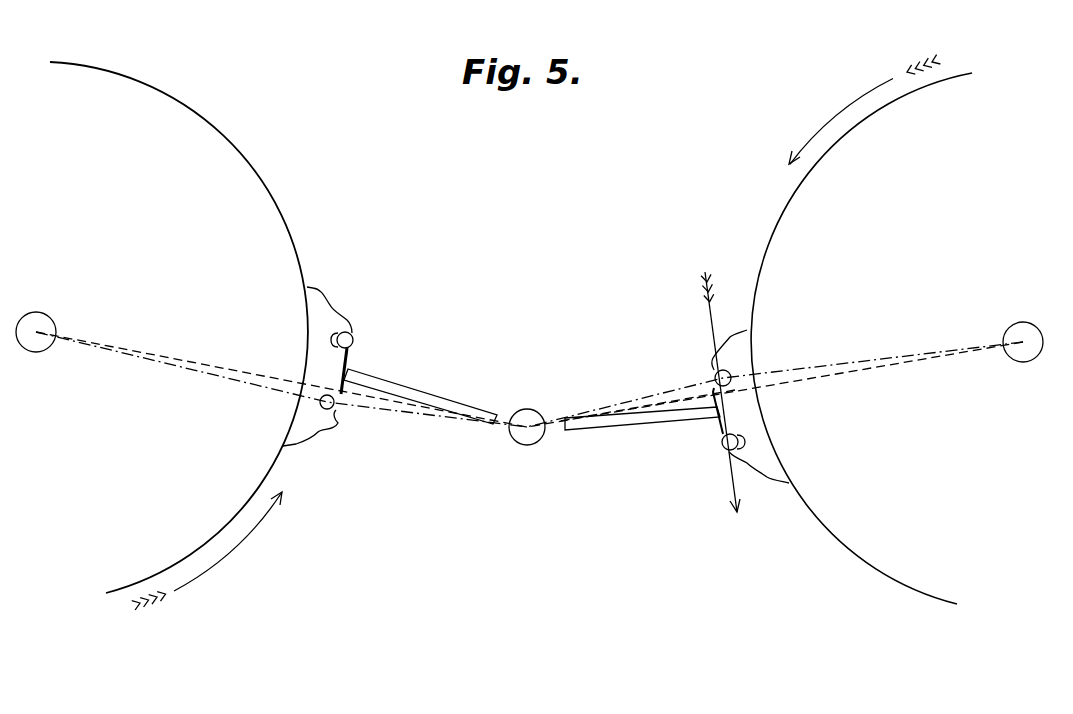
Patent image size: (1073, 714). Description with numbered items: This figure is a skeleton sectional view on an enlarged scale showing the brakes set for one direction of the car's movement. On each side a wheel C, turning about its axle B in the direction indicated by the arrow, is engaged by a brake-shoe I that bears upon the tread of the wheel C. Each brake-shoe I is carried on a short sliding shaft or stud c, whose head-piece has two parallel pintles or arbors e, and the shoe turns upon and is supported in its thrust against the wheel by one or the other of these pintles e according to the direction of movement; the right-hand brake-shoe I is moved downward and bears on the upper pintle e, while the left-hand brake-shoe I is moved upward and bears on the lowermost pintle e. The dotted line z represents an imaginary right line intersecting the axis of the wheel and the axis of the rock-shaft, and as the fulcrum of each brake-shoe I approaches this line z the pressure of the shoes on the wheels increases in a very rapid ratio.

The axle B is at (532, 337).
The wheel C is at (511, 332).
The brake-shoe I is at (536, 392).
The sliding shaft or stud c is at (532, 399).
The pintle or arbor e is at (532, 391).
The dotted line z is at (529, 379).
The pivot P is at (527, 433).